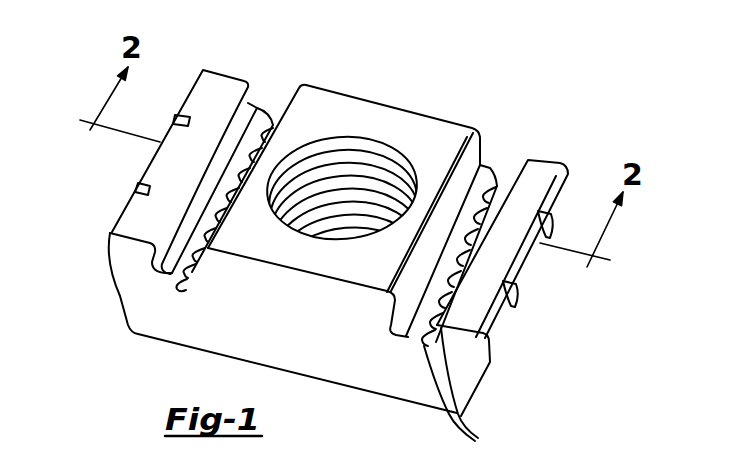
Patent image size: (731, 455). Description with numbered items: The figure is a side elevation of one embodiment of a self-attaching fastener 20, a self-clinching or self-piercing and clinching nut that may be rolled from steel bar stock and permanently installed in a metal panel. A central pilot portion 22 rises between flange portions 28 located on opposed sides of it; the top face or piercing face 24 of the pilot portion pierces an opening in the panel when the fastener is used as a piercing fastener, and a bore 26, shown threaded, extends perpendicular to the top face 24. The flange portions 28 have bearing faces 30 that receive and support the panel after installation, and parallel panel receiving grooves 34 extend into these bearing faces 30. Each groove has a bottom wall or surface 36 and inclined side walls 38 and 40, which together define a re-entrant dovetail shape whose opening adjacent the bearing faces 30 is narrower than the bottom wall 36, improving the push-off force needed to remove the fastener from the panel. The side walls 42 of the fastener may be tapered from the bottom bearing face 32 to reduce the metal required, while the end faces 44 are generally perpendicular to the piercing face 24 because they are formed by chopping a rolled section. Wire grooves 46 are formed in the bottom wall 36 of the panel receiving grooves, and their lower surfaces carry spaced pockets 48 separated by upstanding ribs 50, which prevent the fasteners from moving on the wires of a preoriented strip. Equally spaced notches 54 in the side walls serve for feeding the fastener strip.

The self-attaching fastener 20 is at (427, 42).
The central pilot portion 22 is at (424, 115).
The top face or piercing face 24 is at (314, 98).
The bore 26 is at (346, 158).
The flange portions 28 is at (123, 222).
The bearing faces 30 is at (157, 177).
The bottom bearing face 32 is at (287, 371).
The panel receiving grooves 34 is at (496, 137).
The bottom wall or surface 36 is at (248, 104).
The inclined side wall 38 is at (175, 280).
The inclined side wall (inner wall) 40 is at (200, 281).
The side walls 42 is at (529, 294).
The end faces 44 is at (332, 351).
The wire grooves 46 is at (172, 274).
The spaced pockets 48 is at (460, 391).
The upstanding ribs 50 is at (450, 282).
The notches 54 is at (515, 303).